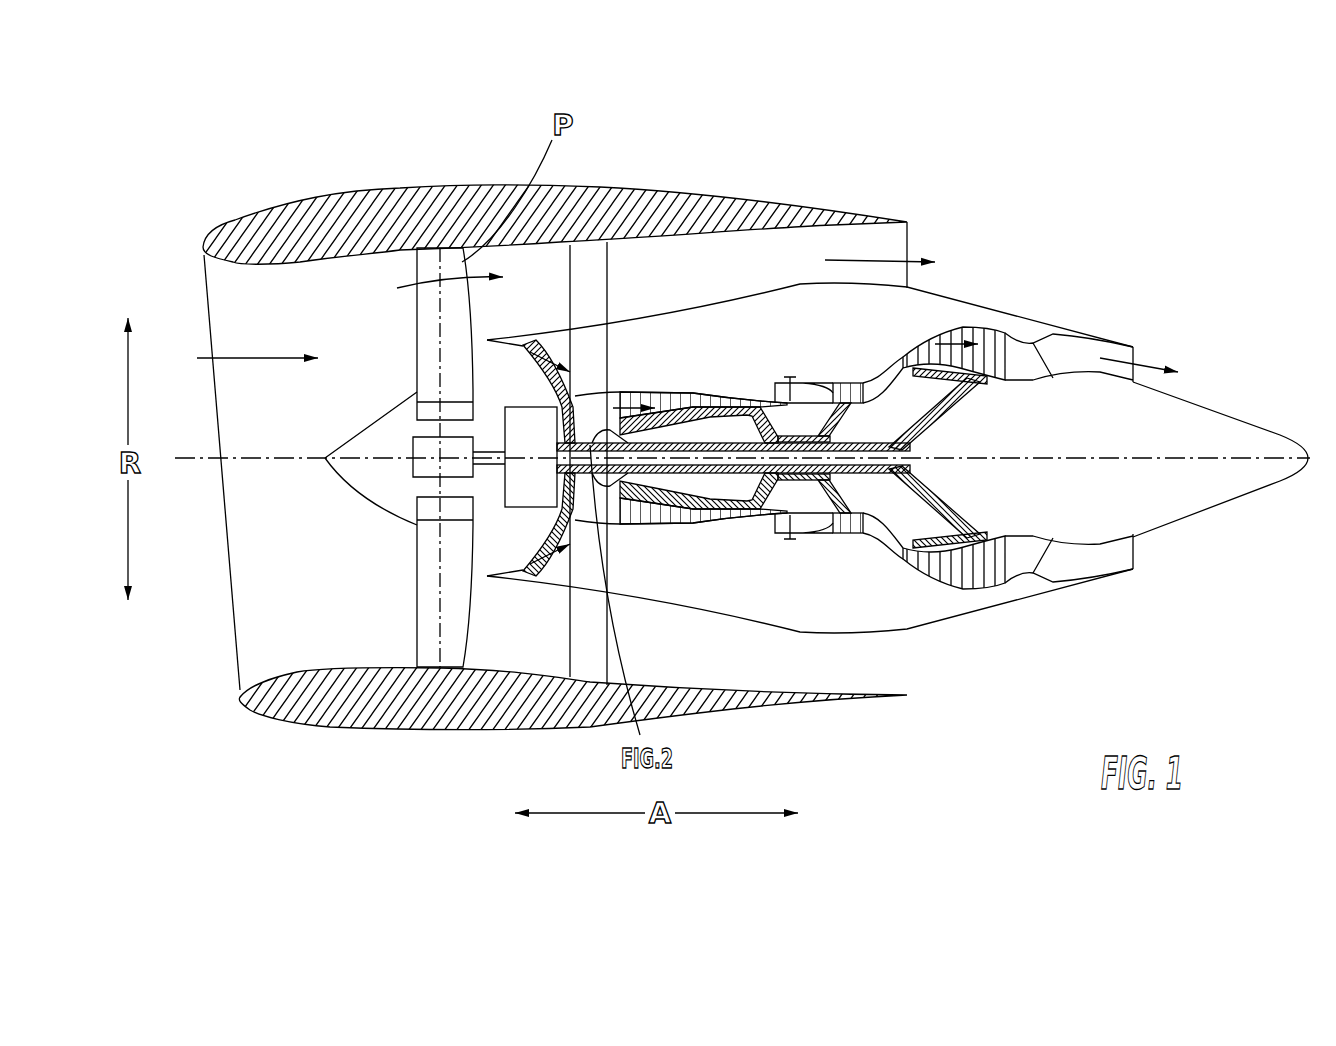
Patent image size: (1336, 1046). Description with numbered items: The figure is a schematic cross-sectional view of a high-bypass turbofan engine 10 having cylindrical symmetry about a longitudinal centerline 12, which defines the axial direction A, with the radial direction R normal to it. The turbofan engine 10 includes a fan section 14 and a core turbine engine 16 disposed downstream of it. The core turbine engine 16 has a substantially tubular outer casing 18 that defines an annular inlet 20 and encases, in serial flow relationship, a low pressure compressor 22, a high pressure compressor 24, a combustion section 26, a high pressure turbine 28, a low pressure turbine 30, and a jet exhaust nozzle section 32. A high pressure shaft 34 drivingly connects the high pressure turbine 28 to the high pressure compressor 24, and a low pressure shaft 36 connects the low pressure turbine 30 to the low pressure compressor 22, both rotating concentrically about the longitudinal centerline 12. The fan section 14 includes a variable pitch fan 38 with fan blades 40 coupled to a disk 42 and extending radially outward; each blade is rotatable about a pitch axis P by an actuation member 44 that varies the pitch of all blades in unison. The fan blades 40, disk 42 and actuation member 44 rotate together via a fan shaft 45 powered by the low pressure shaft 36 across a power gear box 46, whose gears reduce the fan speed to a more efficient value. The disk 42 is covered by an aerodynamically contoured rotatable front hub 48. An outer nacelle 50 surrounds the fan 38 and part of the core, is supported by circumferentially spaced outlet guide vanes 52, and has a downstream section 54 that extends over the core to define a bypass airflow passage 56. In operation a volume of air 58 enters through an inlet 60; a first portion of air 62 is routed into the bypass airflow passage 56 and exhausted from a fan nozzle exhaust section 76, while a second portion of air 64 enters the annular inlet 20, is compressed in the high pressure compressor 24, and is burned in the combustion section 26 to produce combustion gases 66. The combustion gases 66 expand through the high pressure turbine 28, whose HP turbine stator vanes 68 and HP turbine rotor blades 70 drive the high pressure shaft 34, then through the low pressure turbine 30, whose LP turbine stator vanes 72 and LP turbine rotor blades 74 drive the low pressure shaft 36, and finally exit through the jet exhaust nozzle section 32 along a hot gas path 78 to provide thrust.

The turbofan engine 10 is at (1053, 192).
The longitudinal centerline 12 is at (1073, 457).
The fan section 14 is at (372, 270).
The core turbine engine 16 is at (727, 338).
The outer casing 18 is at (767, 622).
The annular inlet 20 is at (520, 561).
The low pressure compressor 22 is at (562, 523).
The high pressure compressor 24 is at (637, 520).
The combustion section 26 is at (806, 530).
The high pressure turbine 28 is at (875, 530).
The low pressure turbine 30 is at (993, 590).
The jet exhaust nozzle section 32 is at (1053, 572).
The high pressure shaft 34 is at (820, 418).
The low pressure shaft 36 is at (890, 447).
The variable pitch fan 38 is at (378, 510).
The fan blades 40 is at (417, 608).
The disk 42 is at (423, 408).
The actuation member 44 is at (417, 437).
The fan shaft 45 is at (486, 445).
The power gear box 46 is at (540, 422).
The rotatable front hub 48 is at (337, 475).
The outer nacelle 50 is at (463, 730).
The outlet guide vanes 52 is at (607, 268).
The downstream section of the nacelle 54 is at (852, 212).
The bypass airflow passage 56 is at (844, 262).
The volume of air 58 is at (258, 352).
The inlet 60 is at (240, 682).
The first portion of air 62 is at (433, 290).
The second portion of air 64 is at (490, 340).
The combustion gases 66 is at (878, 378).
The HP turbine stator vanes 68 is at (823, 535).
The HP turbine rotor blades 70 is at (853, 503).
The LP turbine stator vanes 72 is at (907, 577).
The LP turbine rotor blades 74 is at (923, 590).
The fan nozzle exhaust section 76 is at (897, 245).
The hot gas path 78 is at (888, 362).